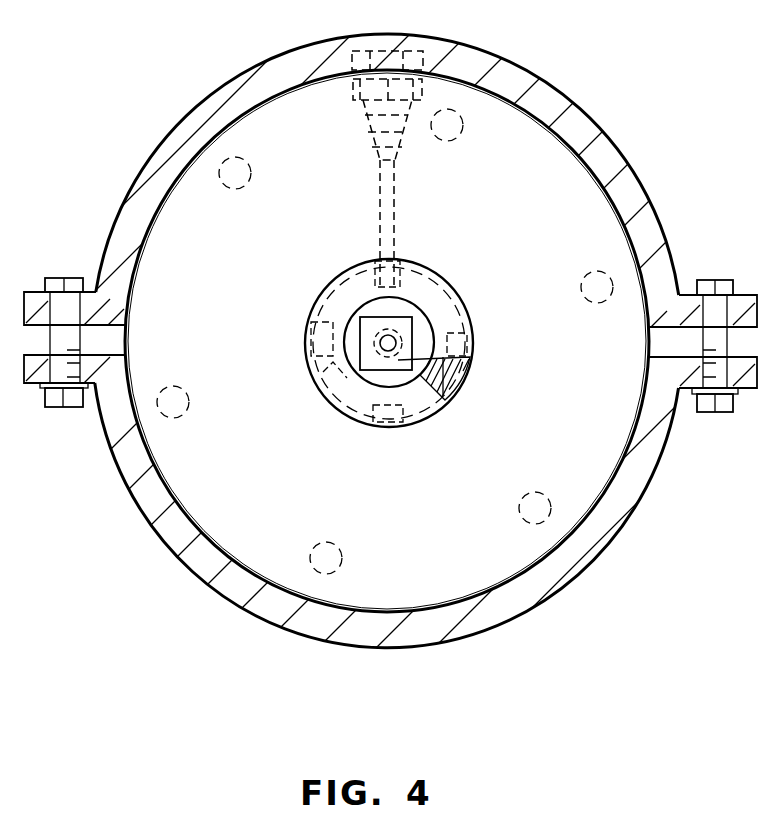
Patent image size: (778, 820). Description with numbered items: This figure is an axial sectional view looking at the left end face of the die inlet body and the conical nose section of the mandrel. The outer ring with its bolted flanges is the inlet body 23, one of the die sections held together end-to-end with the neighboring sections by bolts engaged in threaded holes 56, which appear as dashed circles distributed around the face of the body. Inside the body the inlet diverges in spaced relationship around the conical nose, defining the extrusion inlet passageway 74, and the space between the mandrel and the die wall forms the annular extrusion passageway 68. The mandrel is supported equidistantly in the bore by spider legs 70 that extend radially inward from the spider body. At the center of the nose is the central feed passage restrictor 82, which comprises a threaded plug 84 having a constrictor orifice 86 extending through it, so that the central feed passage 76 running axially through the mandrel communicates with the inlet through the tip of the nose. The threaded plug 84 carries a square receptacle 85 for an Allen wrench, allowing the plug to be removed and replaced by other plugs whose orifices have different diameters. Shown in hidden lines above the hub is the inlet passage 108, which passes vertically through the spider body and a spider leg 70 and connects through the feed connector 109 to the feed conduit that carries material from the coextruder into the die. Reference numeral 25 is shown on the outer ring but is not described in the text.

The clamp ring 25 is at (603, 132).
The inlet body 23 is at (466, 553).
The threaded holes 56 is at (230, 192).
The feed connector 109 is at (424, 54).
The inlet passage 108 is at (396, 222).
The annular extrusion passageway 68 is at (408, 426).
The spider legs 70 is at (397, 272).
The extrusion inlet passageway 74 is at (337, 366).
The central feed passage restrictor 82 is at (434, 332).
The square receptacle 85 is at (404, 315).
The central feed passage 76 is at (377, 337).
The constrictor orifice 86 is at (382, 352).
The threaded plug 84 is at (458, 386).